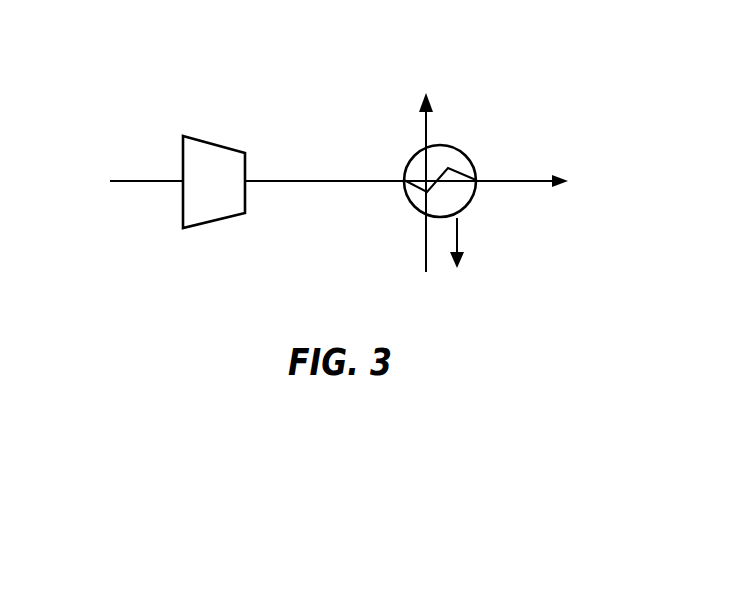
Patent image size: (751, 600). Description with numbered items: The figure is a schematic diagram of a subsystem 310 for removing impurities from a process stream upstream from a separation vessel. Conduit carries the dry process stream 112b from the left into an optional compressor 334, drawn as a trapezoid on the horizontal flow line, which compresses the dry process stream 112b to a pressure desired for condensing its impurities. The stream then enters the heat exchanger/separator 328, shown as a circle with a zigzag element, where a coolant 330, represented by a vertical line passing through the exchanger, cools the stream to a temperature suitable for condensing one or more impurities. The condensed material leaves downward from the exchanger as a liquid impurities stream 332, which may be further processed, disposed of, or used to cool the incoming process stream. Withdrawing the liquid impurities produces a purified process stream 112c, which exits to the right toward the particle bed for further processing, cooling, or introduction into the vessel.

The subsystem 310 is at (155, 85).
The dry process stream 112b is at (148, 180).
The compressor 334 is at (215, 143).
The purified process stream 112c is at (512, 181).
The heat exchanger/separator 328 is at (415, 207).
The coolant 330 is at (423, 242).
The liquid impurities stream 332 is at (462, 232).